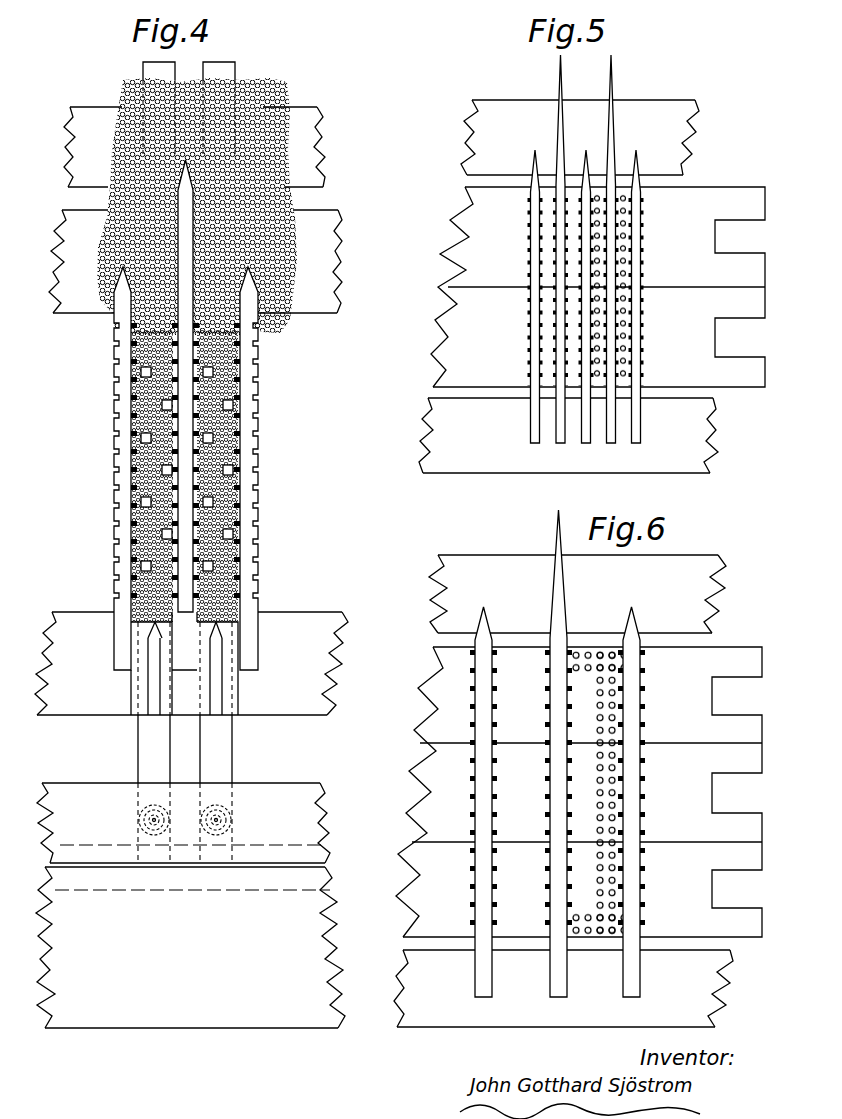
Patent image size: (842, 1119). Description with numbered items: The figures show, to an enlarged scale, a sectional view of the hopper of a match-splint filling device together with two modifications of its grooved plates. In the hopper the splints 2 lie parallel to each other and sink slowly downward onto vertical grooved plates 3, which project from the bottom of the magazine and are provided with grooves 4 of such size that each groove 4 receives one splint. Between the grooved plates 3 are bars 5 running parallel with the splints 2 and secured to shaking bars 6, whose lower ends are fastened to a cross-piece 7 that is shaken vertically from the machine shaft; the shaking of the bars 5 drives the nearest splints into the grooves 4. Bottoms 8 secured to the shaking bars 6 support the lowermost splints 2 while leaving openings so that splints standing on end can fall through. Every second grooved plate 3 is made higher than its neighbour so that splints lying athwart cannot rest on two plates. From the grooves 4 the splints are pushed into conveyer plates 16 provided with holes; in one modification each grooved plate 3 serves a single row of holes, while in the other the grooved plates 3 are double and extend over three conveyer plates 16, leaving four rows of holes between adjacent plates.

In FIG. 4, the splints 2 is at (110, 238).
In FIG. 4, the grooved plates 3 is at (114, 340).
In FIG. 5, the grooved plates 3 is at (609, 158).
In FIG. 6, the grooved plates 3 is at (628, 618).
In FIG. 4, the grooves 4 is at (114, 430).
In FIG. 5, the grooves 4 is at (642, 233).
In FIG. 6, the grooves 4 is at (547, 727).
In FIG. 4, the bars 5 is at (233, 470).
In FIG. 4, the shaking bars 6 is at (218, 750).
In FIG. 4, the cross-piece 7 is at (293, 797).
In FIG. 4, the bottoms 8 is at (228, 630).
In FIG. 5, the conveyer plates 16 is at (598, 287).
In FIG. 6, the conveyer plates 16 is at (579, 792).